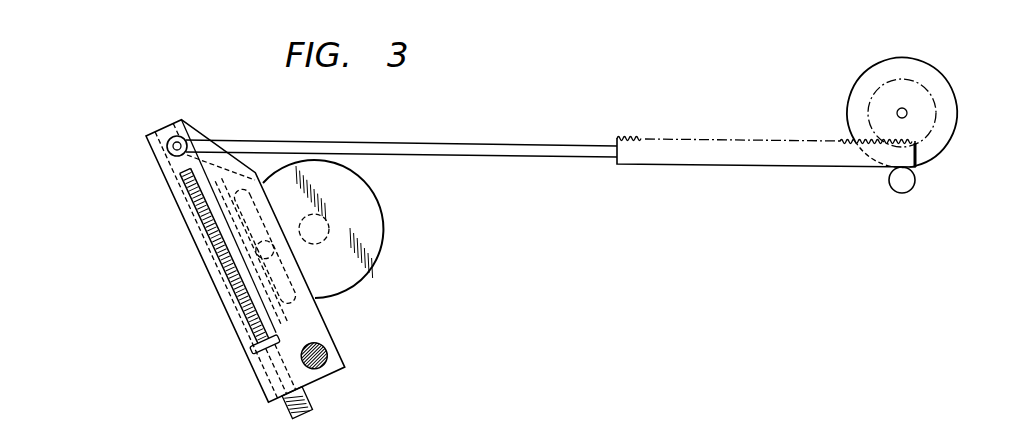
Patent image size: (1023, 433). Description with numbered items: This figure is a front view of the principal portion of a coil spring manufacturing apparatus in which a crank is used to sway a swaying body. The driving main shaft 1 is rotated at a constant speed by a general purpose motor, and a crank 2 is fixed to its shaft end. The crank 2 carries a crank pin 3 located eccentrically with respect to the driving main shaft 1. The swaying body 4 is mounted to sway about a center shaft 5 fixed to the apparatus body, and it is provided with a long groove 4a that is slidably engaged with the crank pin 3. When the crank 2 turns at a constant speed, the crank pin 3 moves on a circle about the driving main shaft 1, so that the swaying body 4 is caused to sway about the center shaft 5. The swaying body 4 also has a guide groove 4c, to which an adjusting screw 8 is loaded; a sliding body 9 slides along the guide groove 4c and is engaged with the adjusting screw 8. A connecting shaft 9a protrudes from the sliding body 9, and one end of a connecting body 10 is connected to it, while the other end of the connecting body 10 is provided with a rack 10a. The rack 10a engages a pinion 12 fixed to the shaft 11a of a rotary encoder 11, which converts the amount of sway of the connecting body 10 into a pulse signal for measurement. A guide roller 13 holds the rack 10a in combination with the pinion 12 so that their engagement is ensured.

The driving main shaft 1 is at (326, 220).
The crank 2 is at (372, 240).
The crank pin 3 is at (273, 251).
The swaying body 4 is at (207, 269).
The long groove 4a is at (294, 300).
The guide groove 4c is at (238, 303).
The center shaft 5 is at (328, 352).
The adjusting screw 8 is at (315, 401).
The sliding body 9 is at (170, 137).
The connecting shaft 9a is at (168, 150).
The connecting body 10 is at (677, 143).
The rack 10a is at (637, 136).
The rotary encoder 11 is at (858, 92).
The shaft 11a is at (906, 113).
The pinion 12 is at (918, 83).
The guide roller 13 is at (910, 181).